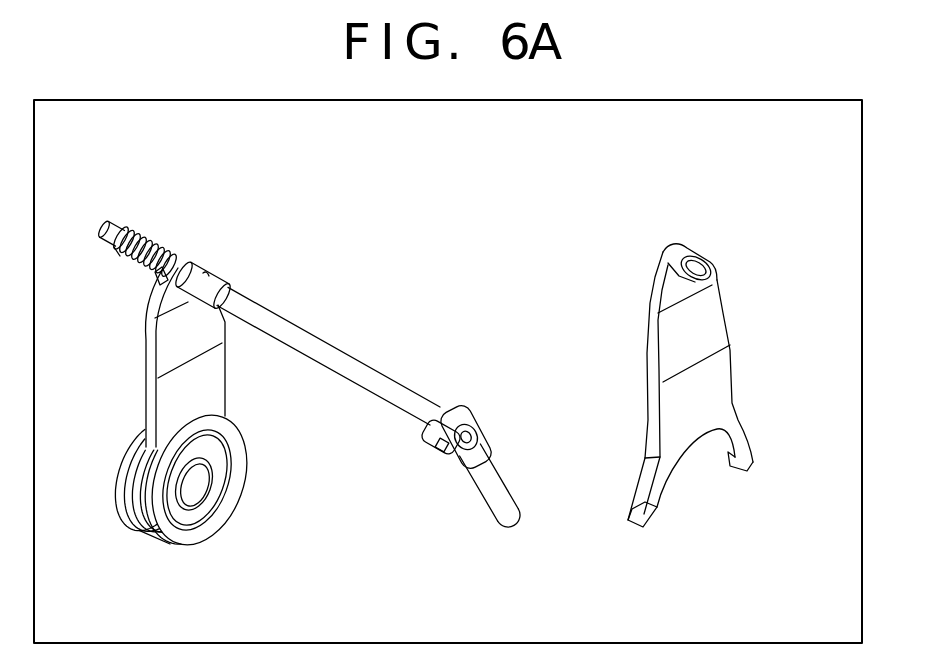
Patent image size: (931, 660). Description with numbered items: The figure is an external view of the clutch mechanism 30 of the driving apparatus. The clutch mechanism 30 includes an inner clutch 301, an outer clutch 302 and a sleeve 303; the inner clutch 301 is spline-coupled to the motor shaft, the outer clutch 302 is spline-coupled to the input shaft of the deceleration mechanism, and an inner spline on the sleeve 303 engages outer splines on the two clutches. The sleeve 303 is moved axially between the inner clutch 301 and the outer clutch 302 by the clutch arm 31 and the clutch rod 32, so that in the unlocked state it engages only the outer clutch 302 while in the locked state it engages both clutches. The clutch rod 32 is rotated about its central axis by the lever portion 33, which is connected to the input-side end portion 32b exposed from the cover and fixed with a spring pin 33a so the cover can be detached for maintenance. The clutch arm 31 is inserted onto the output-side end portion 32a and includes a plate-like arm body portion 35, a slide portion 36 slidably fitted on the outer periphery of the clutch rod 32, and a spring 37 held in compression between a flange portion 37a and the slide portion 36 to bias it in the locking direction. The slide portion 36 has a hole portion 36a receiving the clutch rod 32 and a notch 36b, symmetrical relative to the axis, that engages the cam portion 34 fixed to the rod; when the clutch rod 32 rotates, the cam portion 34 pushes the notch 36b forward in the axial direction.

The clutch mechanism 30 is at (430, 229).
The clutch arm 31 is at (152, 360).
The clutch rod 32 is at (357, 370).
The output-side end portion 32a is at (110, 228).
The input-side end portion 32b is at (479, 425).
The lever portion 33 is at (507, 492).
The spring pin 33a is at (465, 410).
The cam portion 34 is at (200, 271).
The arm body portion 35 is at (722, 385).
The slide portion 36 is at (173, 258).
The hole portion 36a is at (705, 258).
The notch 36b is at (712, 270).
The spring 37 is at (147, 233).
The flange portion 37a is at (118, 257).
The inner clutch 301 is at (128, 462).
The outer clutch 302 is at (207, 500).
The sleeve 303 is at (180, 540).